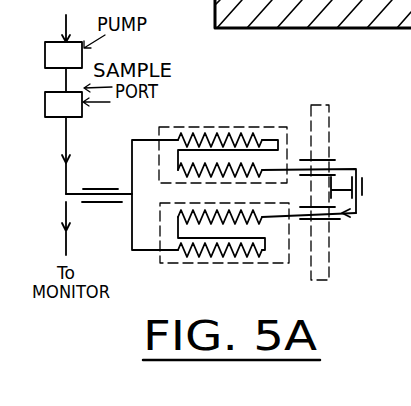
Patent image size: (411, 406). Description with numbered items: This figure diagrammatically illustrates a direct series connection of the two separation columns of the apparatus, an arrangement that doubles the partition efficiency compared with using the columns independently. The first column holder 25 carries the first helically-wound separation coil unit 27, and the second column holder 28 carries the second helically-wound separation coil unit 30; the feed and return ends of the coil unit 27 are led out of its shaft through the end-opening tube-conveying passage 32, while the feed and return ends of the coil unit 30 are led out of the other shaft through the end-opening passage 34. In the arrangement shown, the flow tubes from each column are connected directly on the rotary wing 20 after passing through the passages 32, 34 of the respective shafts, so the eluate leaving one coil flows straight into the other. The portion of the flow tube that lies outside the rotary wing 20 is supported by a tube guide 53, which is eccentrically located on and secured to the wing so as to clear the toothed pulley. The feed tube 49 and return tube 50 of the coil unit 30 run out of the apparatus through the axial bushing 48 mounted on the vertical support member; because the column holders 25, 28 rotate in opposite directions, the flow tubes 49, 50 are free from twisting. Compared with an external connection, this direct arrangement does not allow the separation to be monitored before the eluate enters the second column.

The rotary wing 20 is at (333, 108).
The first column holder 25 is at (170, 125).
The first helically-wound separation coil unit 27 is at (242, 130).
The second column holder 28 is at (170, 262).
The second helically-wound separation coil unit 30 is at (208, 257).
The end-opening tube-conveying passage 32 is at (320, 158).
The end-opening passage 34 is at (322, 220).
The axial bushing 48 is at (97, 186).
The feed tube 49 is at (67, 177).
The return tube 50 is at (68, 238).
The tube guide 53 is at (363, 182).